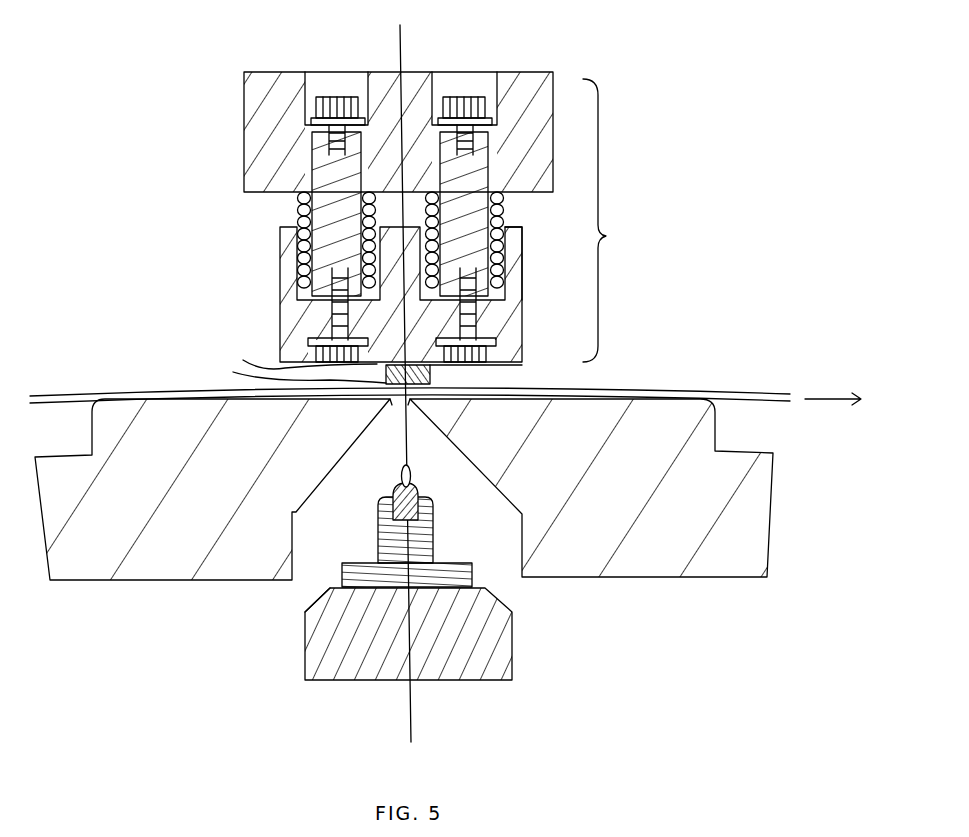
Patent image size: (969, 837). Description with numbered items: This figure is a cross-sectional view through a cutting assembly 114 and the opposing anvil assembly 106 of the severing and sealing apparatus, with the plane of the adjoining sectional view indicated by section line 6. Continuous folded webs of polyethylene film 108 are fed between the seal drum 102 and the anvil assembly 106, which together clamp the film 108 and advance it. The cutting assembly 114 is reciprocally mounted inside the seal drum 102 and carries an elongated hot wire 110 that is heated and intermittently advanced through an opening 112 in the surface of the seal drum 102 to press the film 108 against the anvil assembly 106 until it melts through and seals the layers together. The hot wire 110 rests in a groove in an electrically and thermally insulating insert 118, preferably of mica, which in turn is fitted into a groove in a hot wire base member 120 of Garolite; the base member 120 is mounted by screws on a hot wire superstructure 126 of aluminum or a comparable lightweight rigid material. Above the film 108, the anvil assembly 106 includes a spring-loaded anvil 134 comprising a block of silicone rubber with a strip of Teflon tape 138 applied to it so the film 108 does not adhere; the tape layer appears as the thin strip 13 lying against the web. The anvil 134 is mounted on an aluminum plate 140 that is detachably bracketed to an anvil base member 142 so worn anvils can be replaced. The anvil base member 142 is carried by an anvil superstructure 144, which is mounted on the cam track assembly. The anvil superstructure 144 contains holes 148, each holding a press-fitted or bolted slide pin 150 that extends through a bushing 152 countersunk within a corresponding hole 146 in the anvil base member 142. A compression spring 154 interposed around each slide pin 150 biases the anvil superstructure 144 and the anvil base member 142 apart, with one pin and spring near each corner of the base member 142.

The section line 6- 6 is at (400, 25).
The composite web layer 13 is at (299, 358).
The seal drum 102 is at (774, 475).
The anvil assembly 106 is at (612, 220).
The polyethylene film 108 is at (748, 392).
The hot wire 110 is at (411, 479).
The opening 112 is at (405, 410).
The cutting assembly 114 is at (285, 621).
The insulating insert 118 is at (418, 490).
The hot wire base member 120 is at (435, 549).
The hot wire superstructure 126 is at (512, 648).
The anvil 134 is at (452, 369).
The Teflon tape 138 is at (288, 373).
The plate 140 is at (440, 366).
The anvil base member 142 is at (280, 288).
The anvil superstructure 144 is at (530, 72).
The hole 146 is at (500, 238).
The hole 148 is at (300, 197).
The slide pin 150 is at (296, 222).
The bushing 152 is at (517, 279).
The compression spring 154 is at (505, 211).